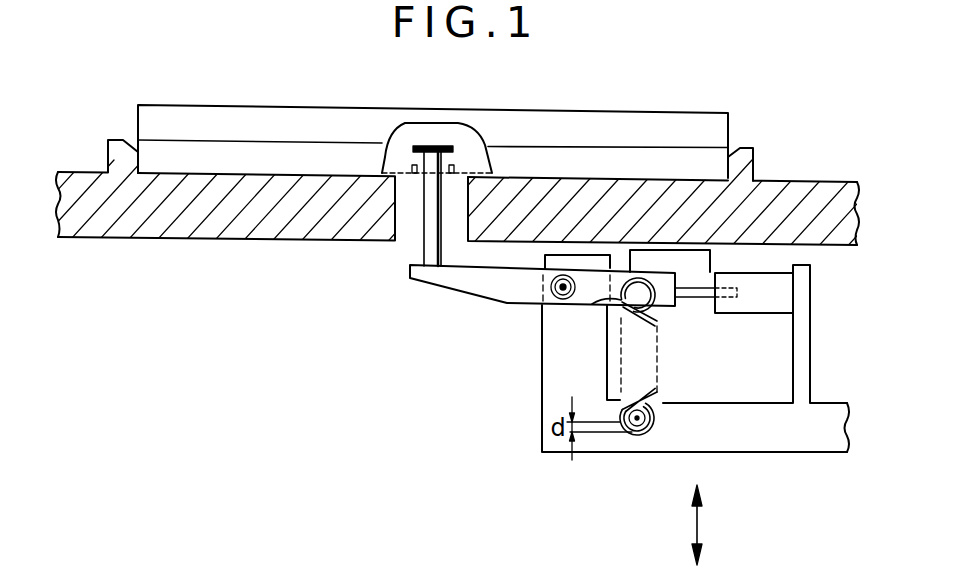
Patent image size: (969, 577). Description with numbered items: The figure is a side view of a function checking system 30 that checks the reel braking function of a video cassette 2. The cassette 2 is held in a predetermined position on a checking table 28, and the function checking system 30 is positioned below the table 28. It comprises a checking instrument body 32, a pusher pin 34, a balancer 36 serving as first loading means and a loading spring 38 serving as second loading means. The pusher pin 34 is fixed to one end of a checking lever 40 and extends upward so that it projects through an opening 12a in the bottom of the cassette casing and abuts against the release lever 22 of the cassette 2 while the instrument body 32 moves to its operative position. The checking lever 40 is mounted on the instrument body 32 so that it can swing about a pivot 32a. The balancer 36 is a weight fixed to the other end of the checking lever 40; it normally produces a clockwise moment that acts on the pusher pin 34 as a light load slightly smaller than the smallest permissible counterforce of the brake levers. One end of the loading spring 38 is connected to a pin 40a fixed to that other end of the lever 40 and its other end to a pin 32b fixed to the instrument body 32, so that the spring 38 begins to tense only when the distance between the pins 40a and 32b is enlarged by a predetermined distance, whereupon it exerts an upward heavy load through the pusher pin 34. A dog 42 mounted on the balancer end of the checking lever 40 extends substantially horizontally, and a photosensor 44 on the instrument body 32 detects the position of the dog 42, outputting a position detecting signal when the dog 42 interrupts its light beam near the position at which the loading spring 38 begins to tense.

The video cassette 2 is at (669, 99).
The opening 12a is at (480, 140).
The release lever 22 is at (443, 146).
The checking table 28 is at (786, 190).
The function checking system 30 is at (428, 404).
The checking instrument body 32 is at (553, 388).
The pivot 32a is at (548, 296).
The pin 32b is at (655, 418).
The pusher pin 34 is at (430, 228).
The balancer 36 is at (712, 256).
The loading spring 38 is at (660, 383).
The checking lever 40 is at (480, 285).
The pin 40a is at (598, 298).
The dog 42 is at (696, 302).
The photosensor 44 is at (760, 300).